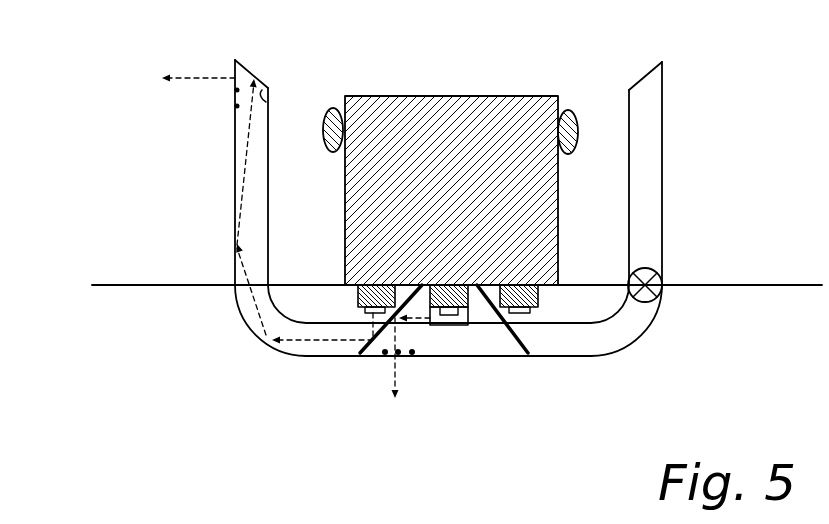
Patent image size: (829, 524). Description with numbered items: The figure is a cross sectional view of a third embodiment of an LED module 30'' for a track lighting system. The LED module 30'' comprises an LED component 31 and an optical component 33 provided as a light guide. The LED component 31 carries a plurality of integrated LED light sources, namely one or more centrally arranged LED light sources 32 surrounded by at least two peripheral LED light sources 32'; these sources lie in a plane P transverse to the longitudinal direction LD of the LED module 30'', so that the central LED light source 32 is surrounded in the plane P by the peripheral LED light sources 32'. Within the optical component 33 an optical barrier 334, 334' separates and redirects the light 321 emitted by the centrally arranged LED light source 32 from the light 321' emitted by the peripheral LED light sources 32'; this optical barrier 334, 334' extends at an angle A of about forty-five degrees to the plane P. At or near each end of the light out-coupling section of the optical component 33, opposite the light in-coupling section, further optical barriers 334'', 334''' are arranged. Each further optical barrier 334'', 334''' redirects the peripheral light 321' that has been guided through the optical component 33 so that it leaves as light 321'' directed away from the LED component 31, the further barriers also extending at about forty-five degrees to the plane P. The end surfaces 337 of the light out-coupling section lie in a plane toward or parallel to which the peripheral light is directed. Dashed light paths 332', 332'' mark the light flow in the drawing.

The LED module 30'' is at (63, 136).
The LED component 31 is at (450, 118).
The centrally arranged LED light source 32 is at (469, 344).
The peripheral LED light source 32' is at (432, 350).
The optical component 33 is at (650, 183).
The light emitted by centrally arranged LED light source 321 is at (456, 414).
The light emitted by peripheral LED light sources 321' is at (250, 298).
The redirected light 321'' is at (227, 124).
The opening 332' is at (449, 381).
The opening 332'' is at (163, 92).
The optical barrier 334 is at (372, 402).
The optical barrier 334' is at (539, 381).
The further optical barrier 334'' is at (338, 179).
The further optical barrier 334''' is at (714, 99).
The end surface 337 is at (236, 107).
The longitudinal direction LD is at (662, 270).
The angle A is at (527, 350).
The plane P is at (737, 286).